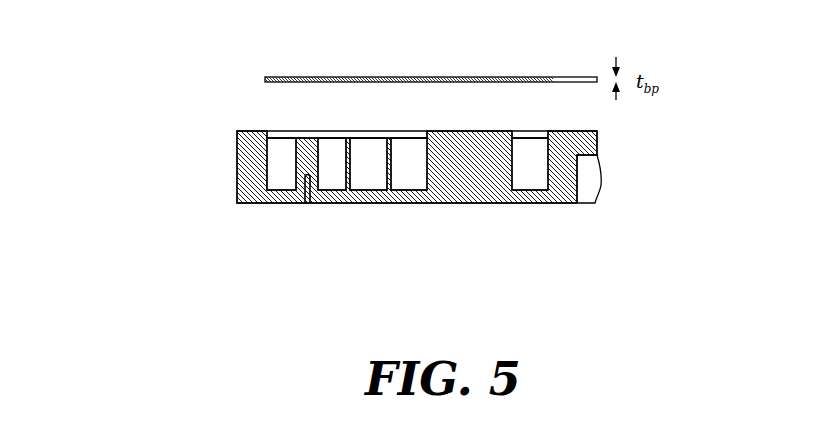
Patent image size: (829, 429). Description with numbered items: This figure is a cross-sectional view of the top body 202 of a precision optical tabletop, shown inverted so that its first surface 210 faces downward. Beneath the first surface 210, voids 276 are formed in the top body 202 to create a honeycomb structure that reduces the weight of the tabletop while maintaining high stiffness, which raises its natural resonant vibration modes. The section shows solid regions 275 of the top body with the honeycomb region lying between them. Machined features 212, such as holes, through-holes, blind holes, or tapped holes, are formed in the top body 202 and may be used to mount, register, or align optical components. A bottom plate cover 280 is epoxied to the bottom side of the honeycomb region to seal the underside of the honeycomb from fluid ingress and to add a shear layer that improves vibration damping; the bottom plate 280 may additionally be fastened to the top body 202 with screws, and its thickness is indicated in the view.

The top body 202 is at (158, 196).
The first surface 210 is at (404, 205).
The machined features 212 is at (306, 205).
The solid regions 275 is at (473, 173).
The voids 276 is at (408, 148).
The bottom plate cover 280 is at (362, 77).